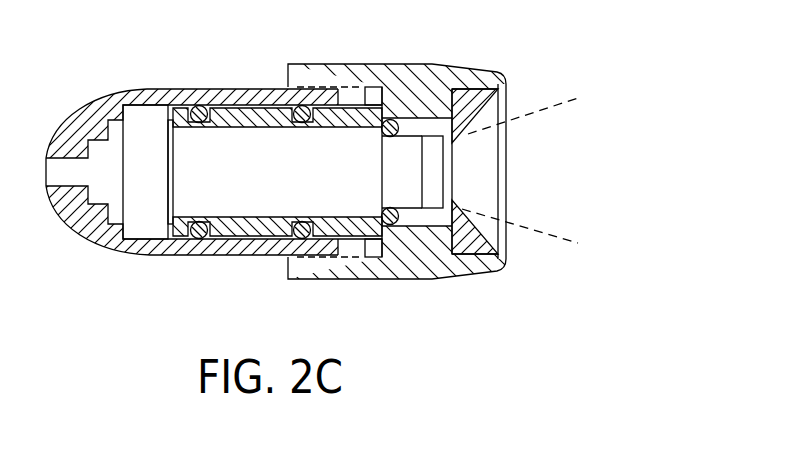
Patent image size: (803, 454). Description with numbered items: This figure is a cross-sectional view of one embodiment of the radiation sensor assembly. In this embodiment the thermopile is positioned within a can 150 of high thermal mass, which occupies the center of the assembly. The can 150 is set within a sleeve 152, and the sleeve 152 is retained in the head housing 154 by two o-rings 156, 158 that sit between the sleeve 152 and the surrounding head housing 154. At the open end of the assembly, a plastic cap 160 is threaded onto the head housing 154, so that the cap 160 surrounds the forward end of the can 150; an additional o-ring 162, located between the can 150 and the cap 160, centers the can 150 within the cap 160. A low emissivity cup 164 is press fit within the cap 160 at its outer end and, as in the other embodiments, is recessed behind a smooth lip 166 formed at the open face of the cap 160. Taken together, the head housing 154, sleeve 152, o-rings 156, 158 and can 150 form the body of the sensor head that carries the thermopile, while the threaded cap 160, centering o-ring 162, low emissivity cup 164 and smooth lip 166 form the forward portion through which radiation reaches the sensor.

The can 150 is at (347, 122).
The sleeve 152 is at (237, 107).
The head housing 154 is at (145, 88).
The o-ring 156 is at (202, 243).
The o-ring 158 is at (293, 238).
The plastic cap 160 is at (432, 63).
The o-ring 162 is at (392, 224).
The low emissivity cup 164 is at (480, 225).
The smooth lip 166 is at (507, 73).